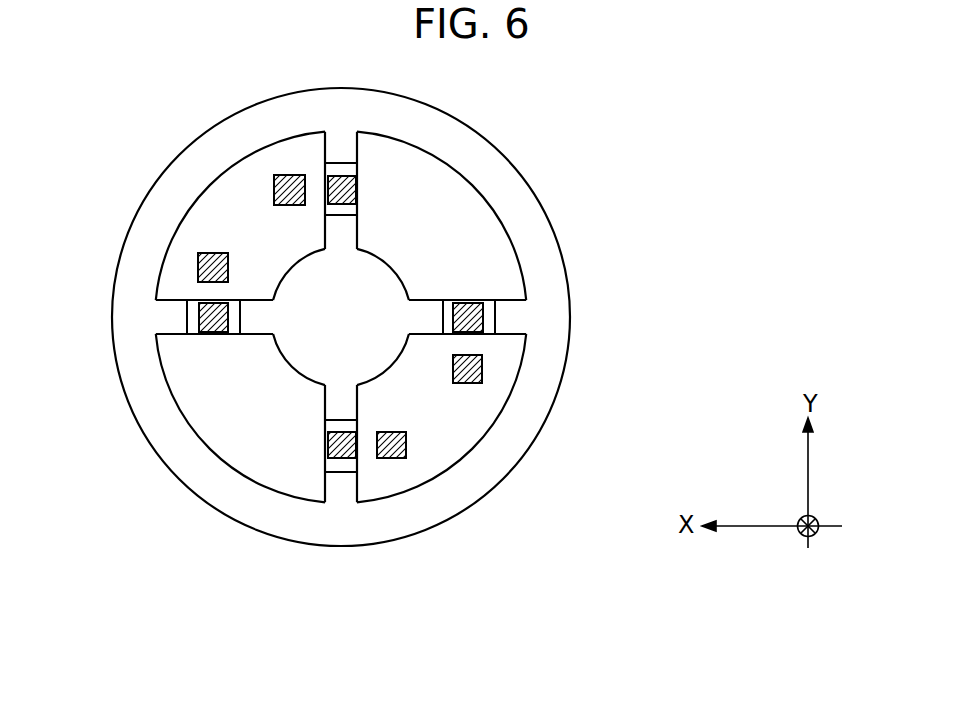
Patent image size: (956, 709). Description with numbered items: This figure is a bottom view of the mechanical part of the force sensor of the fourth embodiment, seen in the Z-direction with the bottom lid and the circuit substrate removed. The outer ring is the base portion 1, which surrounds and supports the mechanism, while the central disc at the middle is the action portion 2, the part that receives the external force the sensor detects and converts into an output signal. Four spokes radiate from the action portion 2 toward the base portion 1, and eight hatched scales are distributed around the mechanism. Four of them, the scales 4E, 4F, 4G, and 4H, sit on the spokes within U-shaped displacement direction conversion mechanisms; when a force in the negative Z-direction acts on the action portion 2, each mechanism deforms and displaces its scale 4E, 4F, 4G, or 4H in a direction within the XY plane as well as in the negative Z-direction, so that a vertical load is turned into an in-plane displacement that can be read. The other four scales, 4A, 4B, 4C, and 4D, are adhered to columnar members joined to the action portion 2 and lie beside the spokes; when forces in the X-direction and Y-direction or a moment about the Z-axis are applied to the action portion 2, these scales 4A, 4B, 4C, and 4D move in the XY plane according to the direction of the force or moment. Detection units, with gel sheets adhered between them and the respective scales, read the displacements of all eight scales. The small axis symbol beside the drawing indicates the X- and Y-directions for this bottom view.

The base portion 1 is at (267, 100).
The action portion 2 is at (373, 270).
The scale 4A is at (217, 262).
The scale 4B is at (475, 372).
The scale 4C is at (278, 192).
The scale 4D is at (395, 458).
The scale 4E is at (205, 319).
The scale 4F is at (477, 313).
The scale 4G is at (350, 190).
The scale 4H is at (340, 458).